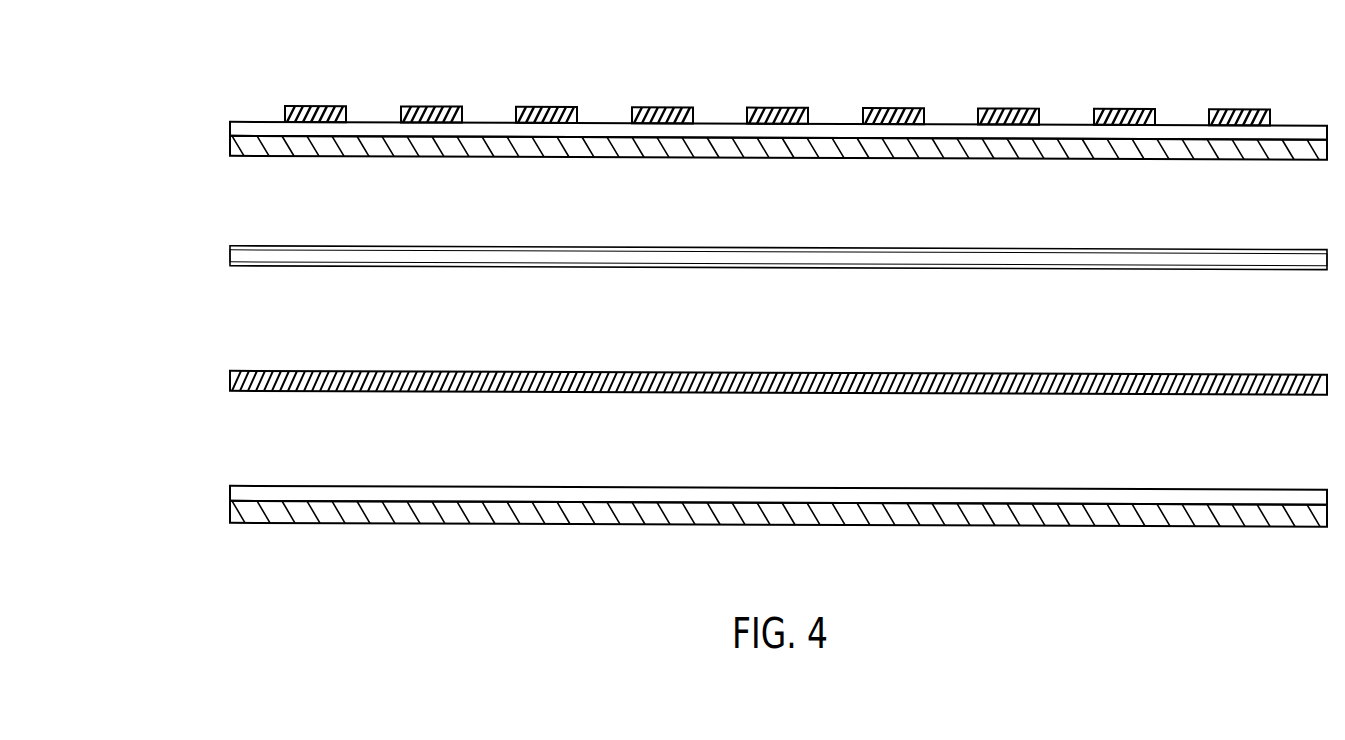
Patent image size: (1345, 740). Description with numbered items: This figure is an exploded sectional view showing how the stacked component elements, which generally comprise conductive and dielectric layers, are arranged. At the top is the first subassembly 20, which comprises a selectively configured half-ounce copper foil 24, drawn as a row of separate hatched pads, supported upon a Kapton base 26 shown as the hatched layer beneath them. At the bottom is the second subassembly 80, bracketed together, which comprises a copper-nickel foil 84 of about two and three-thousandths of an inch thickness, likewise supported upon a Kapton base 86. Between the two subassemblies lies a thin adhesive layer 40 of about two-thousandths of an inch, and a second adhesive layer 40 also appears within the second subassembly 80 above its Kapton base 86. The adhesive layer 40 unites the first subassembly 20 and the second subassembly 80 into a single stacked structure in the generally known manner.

The first subassembly 20 is at (713, 113).
The Cu foil 24 is at (997, 101).
The Kapton base 26 is at (830, 158).
The adhesive layer 40 is at (229, 258).
The second subassembly 80 is at (712, 446).
The CuNi foil 84 is at (752, 371).
The Kapton base 86 is at (527, 522).